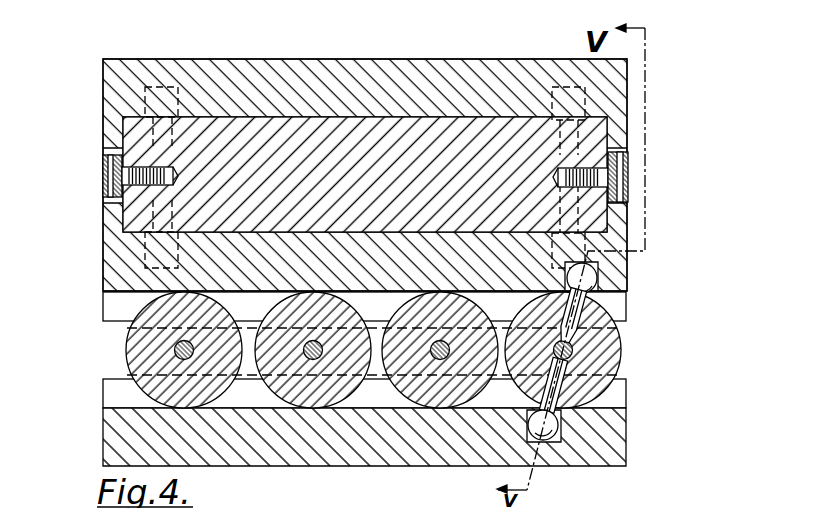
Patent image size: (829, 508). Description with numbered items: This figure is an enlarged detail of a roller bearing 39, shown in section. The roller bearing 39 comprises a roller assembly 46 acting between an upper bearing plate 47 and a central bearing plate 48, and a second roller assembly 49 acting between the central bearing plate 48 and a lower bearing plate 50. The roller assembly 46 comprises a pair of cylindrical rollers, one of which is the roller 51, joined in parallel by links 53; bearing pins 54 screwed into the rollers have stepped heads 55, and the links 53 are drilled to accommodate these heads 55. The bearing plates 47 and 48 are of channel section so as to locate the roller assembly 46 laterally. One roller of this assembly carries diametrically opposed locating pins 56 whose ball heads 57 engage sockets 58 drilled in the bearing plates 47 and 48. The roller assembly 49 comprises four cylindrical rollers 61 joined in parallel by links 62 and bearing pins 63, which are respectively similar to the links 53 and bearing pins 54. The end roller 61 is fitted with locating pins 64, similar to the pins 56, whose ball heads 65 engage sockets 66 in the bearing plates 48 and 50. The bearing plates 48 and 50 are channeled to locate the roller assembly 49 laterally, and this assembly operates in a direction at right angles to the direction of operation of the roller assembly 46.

The roller bearing 39 is at (452, 35).
The roller assembly 46 is at (127, 132).
The upper bearing plate 47 is at (338, 83).
The central bearing plate 48 is at (103, 243).
The roller assembly 49 is at (673, 346).
The lower bearing plate 50 is at (613, 433).
The cylindrical roller 51 is at (270, 127).
The link 53 is at (617, 153).
The bearing pin 54 is at (683, 196).
The stepped head 55 is at (107, 180).
The locating pin 56 is at (162, 100).
The ball head 57 is at (335, 495).
The socket 58 is at (284, 490).
The cylindrical roller 61 is at (132, 340).
The link 62 is at (397, 316).
The bearing pin 63 is at (170, 351).
The locating pin 64 is at (592, 283).
The ball head 65 is at (562, 420).
The socket 66 is at (552, 437).